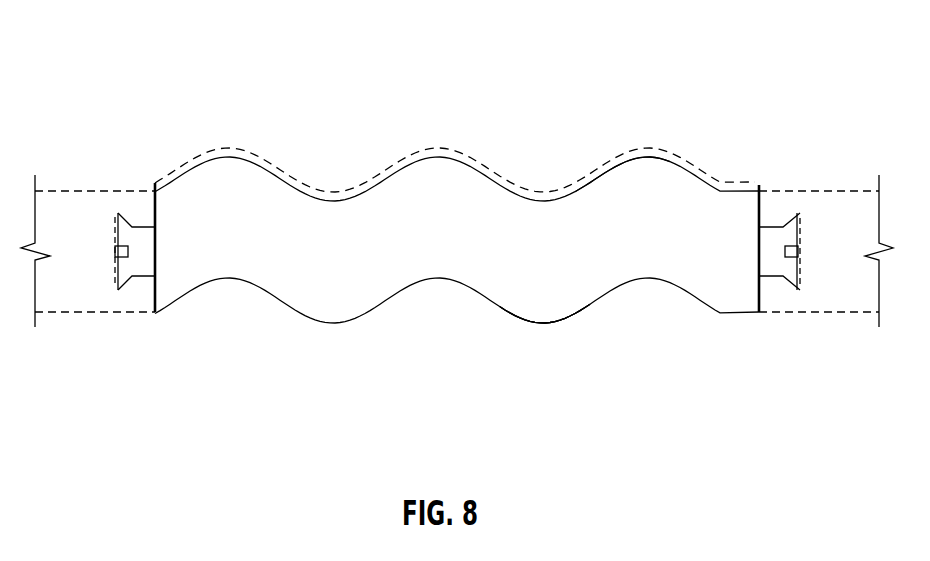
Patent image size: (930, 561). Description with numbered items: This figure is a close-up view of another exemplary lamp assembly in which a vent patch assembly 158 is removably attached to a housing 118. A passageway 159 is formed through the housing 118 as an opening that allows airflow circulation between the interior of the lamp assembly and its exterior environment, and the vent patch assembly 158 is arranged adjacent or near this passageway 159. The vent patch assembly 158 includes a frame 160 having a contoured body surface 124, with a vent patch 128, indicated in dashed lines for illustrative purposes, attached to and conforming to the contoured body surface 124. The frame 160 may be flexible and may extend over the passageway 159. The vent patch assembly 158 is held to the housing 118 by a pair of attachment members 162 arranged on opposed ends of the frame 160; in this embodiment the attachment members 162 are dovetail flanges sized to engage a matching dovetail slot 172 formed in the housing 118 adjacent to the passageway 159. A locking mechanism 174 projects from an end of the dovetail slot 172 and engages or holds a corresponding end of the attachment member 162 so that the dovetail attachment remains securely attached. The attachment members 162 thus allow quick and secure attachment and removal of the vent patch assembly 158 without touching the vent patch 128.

The housing 118 is at (86, 190).
The contoured body surface 124 is at (286, 338).
The vent patch 128 is at (231, 147).
The vent patch assembly 158 is at (630, 47).
The passageway 159 is at (576, 451).
The frame 160 is at (550, 346).
The attachment members 162 is at (150, 260).
The dovetail slot 172 is at (132, 227).
The locking mechanism 174 is at (122, 258).